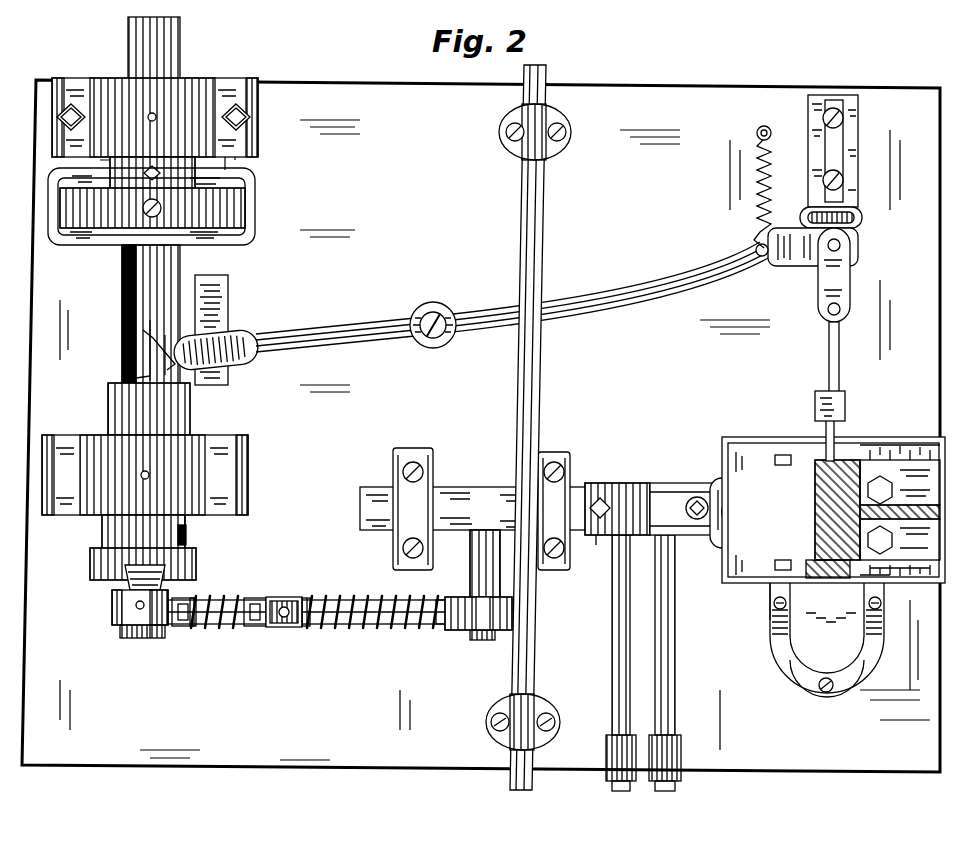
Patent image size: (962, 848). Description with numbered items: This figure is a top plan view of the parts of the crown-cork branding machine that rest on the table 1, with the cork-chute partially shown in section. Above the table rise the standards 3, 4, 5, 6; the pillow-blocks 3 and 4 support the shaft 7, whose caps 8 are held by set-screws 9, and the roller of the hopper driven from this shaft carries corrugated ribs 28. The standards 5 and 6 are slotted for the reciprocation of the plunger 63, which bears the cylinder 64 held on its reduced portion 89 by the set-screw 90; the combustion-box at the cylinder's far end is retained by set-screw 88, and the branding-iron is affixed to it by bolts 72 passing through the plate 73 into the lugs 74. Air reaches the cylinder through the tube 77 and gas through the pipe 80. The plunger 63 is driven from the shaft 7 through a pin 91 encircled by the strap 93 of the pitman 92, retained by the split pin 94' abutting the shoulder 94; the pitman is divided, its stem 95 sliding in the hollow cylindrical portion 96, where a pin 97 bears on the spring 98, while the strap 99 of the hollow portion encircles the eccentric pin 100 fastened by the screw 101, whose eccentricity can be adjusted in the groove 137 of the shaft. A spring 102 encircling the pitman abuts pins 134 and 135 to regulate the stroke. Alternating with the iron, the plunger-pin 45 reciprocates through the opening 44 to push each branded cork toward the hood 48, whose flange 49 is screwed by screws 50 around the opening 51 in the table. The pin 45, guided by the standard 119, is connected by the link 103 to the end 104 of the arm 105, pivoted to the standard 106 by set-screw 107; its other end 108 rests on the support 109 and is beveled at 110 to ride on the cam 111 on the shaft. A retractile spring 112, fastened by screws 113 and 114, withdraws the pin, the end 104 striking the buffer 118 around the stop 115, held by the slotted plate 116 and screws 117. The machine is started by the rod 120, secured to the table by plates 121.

The table 1 is at (481, 426).
The standard 3 is at (80, 86).
The standard 4 is at (69, 442).
The standard 5 is at (415, 448).
The standard 6 is at (560, 452).
The shaft 7 is at (123, 295).
The cap 8 is at (250, 113).
The set-screw 9 is at (238, 124).
The corrugated rib 28 is at (248, 208).
The opening 44 is at (866, 450).
The plunger-pin 45 is at (824, 430).
The hood 48 is at (802, 668).
The flange 49 is at (796, 676).
The screw 50 is at (832, 690).
The opening 51 is at (822, 630).
The plunger 63 is at (470, 492).
The cylinder 64 is at (630, 490).
The bolt 72 is at (730, 460).
The plate 73 is at (720, 562).
The lug 74 is at (714, 478).
The tube 77 is at (610, 622).
The pipe 80 is at (676, 622).
The set-screw 88 is at (686, 510).
The reduced portion 89 is at (586, 483).
The set-screw 90 is at (596, 542).
The pin 91 is at (482, 556).
The pitman 92 is at (384, 627).
The strap 93 is at (468, 630).
The shoulder 94 is at (465, 600).
The split pin 94' is at (487, 647).
The stem 95 is at (310, 628).
The hollow cylindrical portion 96 is at (198, 600).
The pin 97 is at (266, 600).
The spring 98 is at (236, 624).
The strap 99 is at (110, 608).
The eccentric pin 100 is at (158, 630).
The screw 101 is at (128, 638).
The spring 102 is at (280, 628).
The link 103 is at (840, 310).
The end 104 is at (850, 250).
The pivoted arm 105 is at (610, 308).
The standard 106 is at (448, 316).
The set-screw 107 is at (414, 313).
The end 108 is at (242, 363).
The support 109 is at (221, 318).
The bevel 110 is at (125, 359).
The cam 111 is at (118, 378).
The retractile spring 112 is at (756, 186).
The screw 113 is at (762, 258).
The screw 114 is at (758, 130).
The stop 115 is at (858, 232).
The slotted plate 116 is at (858, 157).
The screw 117 is at (843, 114).
The buffer 118 is at (864, 212).
The standard 119 is at (846, 405).
The rod 120 is at (540, 262).
The plate 121 is at (501, 130).
The pin 134 is at (440, 630).
The pin 135 is at (192, 628).
The groove 137 is at (122, 584).